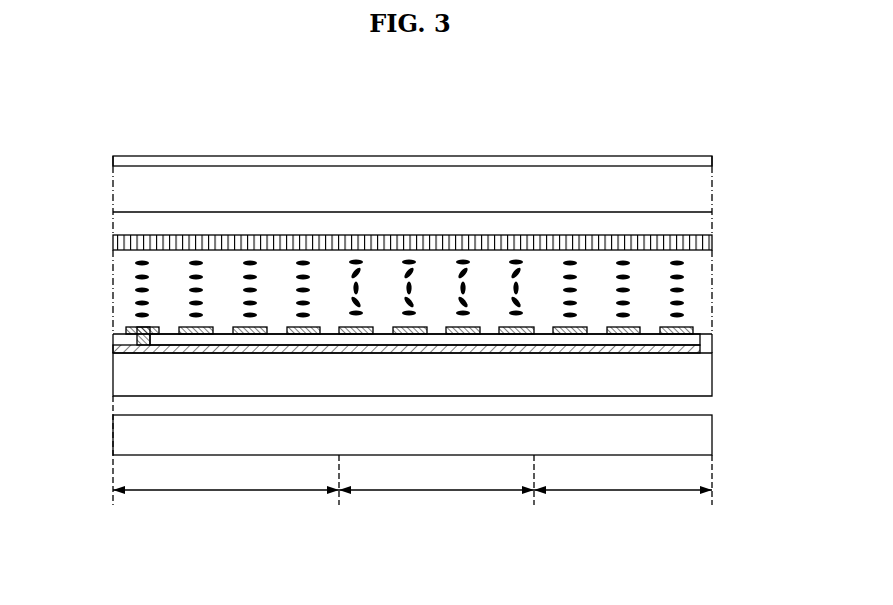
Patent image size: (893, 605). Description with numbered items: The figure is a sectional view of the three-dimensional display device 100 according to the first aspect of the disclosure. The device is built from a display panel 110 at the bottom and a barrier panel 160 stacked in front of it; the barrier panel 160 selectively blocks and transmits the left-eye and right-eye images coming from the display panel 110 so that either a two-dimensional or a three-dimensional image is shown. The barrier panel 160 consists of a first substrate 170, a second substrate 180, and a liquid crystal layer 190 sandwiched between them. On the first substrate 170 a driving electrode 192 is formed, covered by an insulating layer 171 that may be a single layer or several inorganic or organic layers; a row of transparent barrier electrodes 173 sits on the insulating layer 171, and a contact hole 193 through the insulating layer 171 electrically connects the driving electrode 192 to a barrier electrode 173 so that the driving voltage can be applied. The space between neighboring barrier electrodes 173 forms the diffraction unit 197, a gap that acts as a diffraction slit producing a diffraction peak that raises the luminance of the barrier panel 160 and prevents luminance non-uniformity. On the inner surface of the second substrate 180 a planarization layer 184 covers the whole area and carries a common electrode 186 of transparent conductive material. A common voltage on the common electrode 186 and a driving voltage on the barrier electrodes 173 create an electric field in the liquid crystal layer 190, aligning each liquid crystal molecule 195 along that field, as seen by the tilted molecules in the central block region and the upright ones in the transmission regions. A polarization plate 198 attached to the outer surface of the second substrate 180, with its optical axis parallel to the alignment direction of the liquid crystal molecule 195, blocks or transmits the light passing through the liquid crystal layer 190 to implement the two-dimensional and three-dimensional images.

The 3D display device 100 is at (175, 95).
The display panel 110 is at (705, 435).
The barrier panel 160 is at (133, 186).
The first substrate 170 is at (705, 377).
The insulating layer 171 is at (706, 340).
The barrier electrode 173 is at (622, 326).
The second substrate 180 is at (705, 189).
The planarization layer 184 is at (705, 224).
The common electrode 186 is at (713, 244).
The liquid crystal layer 190 is at (444, 292).
The driving electrode 192 is at (540, 349).
The contact hole 193 is at (119, 340).
The liquid crystal molecule 195 is at (686, 262).
The diffraction unit 197 is at (277, 333).
The polarization plate 198 is at (713, 160).